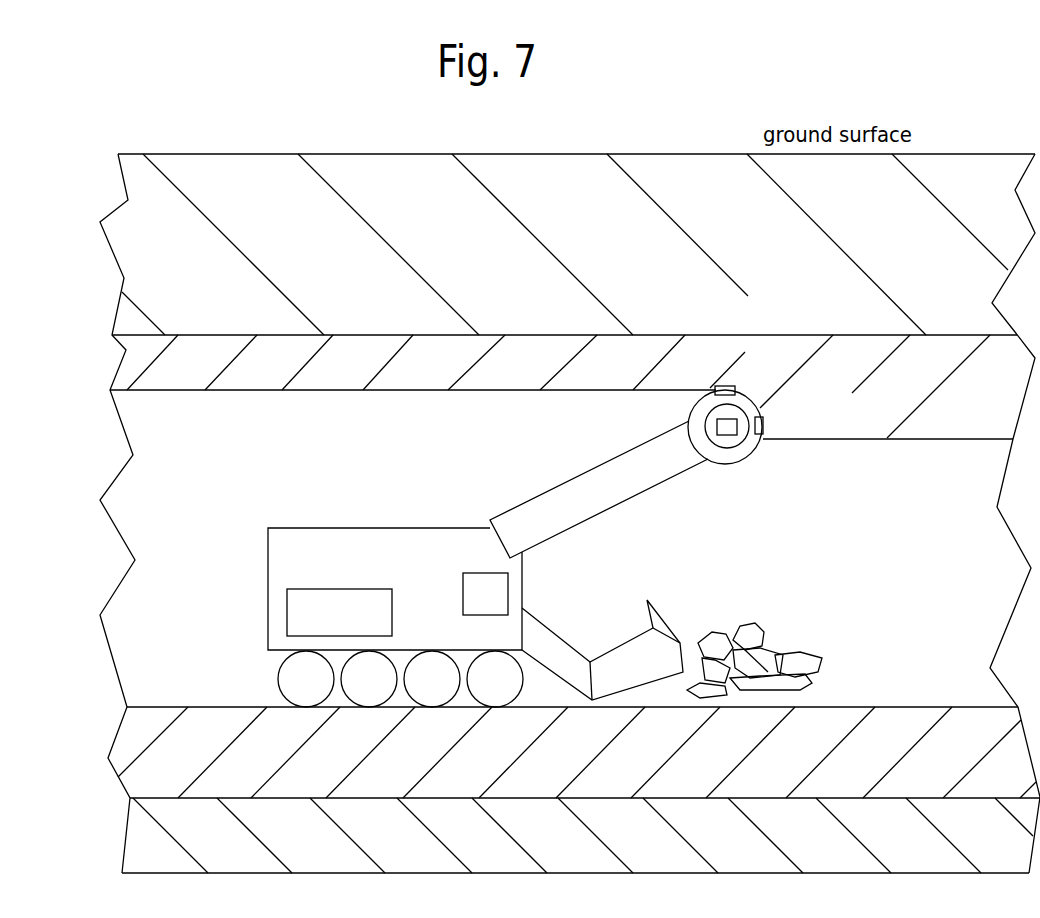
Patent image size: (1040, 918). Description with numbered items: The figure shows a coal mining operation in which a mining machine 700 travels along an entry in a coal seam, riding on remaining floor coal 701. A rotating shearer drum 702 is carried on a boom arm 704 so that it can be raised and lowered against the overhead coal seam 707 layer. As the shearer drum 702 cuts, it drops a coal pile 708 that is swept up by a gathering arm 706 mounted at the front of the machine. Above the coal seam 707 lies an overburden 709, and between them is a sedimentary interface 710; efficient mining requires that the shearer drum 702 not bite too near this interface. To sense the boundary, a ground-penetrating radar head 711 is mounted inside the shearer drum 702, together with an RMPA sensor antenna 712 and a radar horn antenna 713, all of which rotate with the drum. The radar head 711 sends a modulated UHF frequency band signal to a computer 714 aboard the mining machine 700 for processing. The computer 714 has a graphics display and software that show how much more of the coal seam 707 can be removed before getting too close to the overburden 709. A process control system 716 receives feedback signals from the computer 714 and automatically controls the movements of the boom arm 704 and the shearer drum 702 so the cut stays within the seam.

The mining machine 700 is at (250, 515).
The remaining floor coal 701 is at (922, 706).
The shearer drum 702 is at (742, 462).
The boom arm 704 is at (625, 502).
The gathering arm 706 is at (660, 618).
The coal seam 707 is at (947, 366).
The coal pile 708 is at (800, 652).
The overburden 709 is at (650, 254).
The sedimentary interface 710 is at (537, 360).
The ground-penetrating radar head 711 is at (716, 424).
The RMPA sensor antenna 712 is at (722, 387).
The radar horn antenna 713 is at (764, 420).
The computer 714 is at (310, 589).
The process control system 716 is at (488, 573).